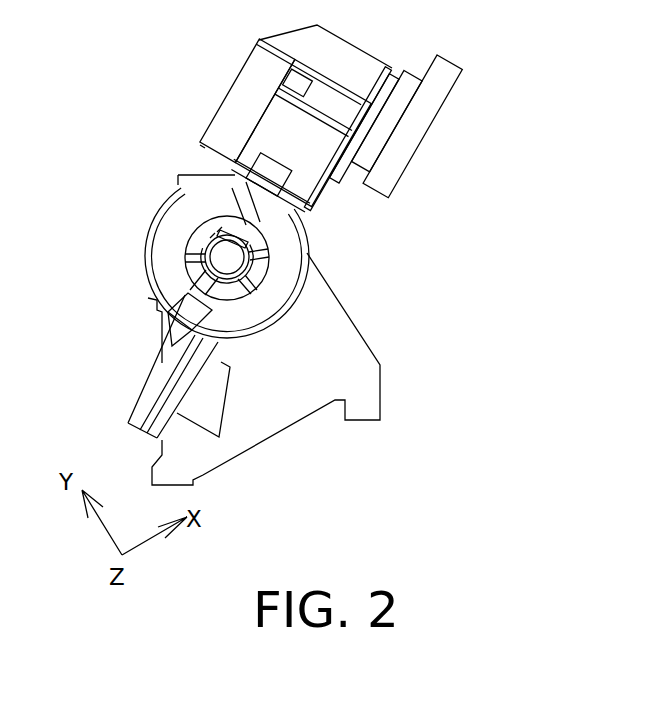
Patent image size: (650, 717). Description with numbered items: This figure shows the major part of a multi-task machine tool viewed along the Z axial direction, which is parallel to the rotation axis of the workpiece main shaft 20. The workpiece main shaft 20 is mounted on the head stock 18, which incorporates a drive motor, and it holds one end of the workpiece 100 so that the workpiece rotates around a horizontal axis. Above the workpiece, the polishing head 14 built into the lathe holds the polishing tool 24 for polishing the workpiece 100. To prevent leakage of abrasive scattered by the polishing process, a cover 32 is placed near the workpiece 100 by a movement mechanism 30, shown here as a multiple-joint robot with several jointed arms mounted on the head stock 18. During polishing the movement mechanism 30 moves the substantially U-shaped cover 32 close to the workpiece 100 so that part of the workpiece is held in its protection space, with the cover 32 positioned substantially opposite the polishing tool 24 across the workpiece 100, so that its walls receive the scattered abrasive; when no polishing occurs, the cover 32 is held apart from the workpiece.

The polishing head 14 is at (237, 103).
The polishing tool 24 is at (188, 173).
The workpiece main shaft 20 is at (170, 242).
The workpiece 100 is at (247, 258).
The cover 32 is at (257, 275).
The head stock 18 is at (350, 366).
The movement mechanism 30 is at (148, 403).